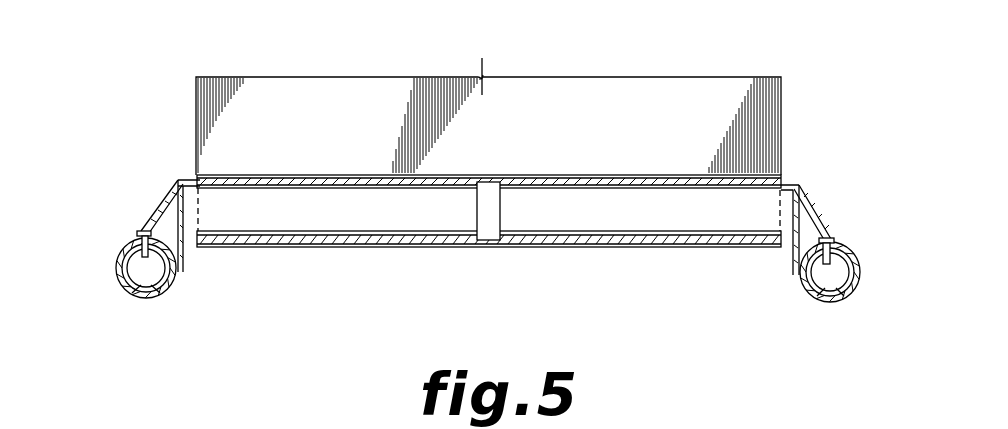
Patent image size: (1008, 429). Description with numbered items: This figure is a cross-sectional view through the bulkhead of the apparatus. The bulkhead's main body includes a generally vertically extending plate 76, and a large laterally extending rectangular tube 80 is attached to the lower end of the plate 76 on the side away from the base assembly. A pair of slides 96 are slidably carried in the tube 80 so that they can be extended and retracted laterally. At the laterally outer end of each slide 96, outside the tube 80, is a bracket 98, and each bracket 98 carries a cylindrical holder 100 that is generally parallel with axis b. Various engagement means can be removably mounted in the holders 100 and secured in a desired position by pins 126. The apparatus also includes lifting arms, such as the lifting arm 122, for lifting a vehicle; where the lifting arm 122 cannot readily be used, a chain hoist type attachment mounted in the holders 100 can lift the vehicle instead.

The plate 76 is at (594, 111).
The rectangular tube 80 is at (486, 248).
The slide 96 is at (310, 246).
The bracket 98 is at (170, 200).
The cylindrical holder 100 is at (165, 295).
The lifting arm 122 is at (137, 300).
The pin 126 is at (137, 232).